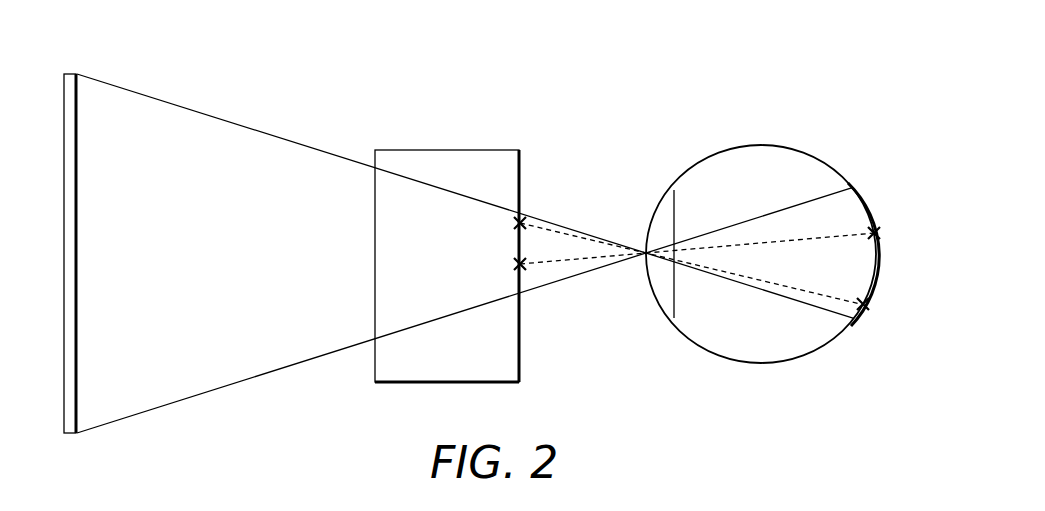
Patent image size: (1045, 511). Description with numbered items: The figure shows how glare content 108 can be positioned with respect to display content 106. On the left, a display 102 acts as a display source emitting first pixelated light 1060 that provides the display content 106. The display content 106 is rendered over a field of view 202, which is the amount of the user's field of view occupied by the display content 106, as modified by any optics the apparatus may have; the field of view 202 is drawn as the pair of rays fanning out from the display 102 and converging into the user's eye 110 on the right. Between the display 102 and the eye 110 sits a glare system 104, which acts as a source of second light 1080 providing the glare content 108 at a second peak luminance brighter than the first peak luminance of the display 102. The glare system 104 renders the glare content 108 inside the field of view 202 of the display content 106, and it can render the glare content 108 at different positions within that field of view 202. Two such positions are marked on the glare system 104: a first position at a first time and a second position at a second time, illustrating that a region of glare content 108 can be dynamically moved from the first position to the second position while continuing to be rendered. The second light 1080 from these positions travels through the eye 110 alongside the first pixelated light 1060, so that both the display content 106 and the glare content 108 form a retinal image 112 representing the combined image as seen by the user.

The display 102 is at (71, 73).
The display content 106 is at (78, 250).
The field of view 202 is at (217, 118).
The first pixelated light 1060 is at (271, 346).
The glare system 104 is at (487, 150).
The glare content 108 is at (485, 250).
The second light 1080 is at (594, 238).
The user's eye 110 is at (759, 145).
The retinal image 112 is at (864, 202).